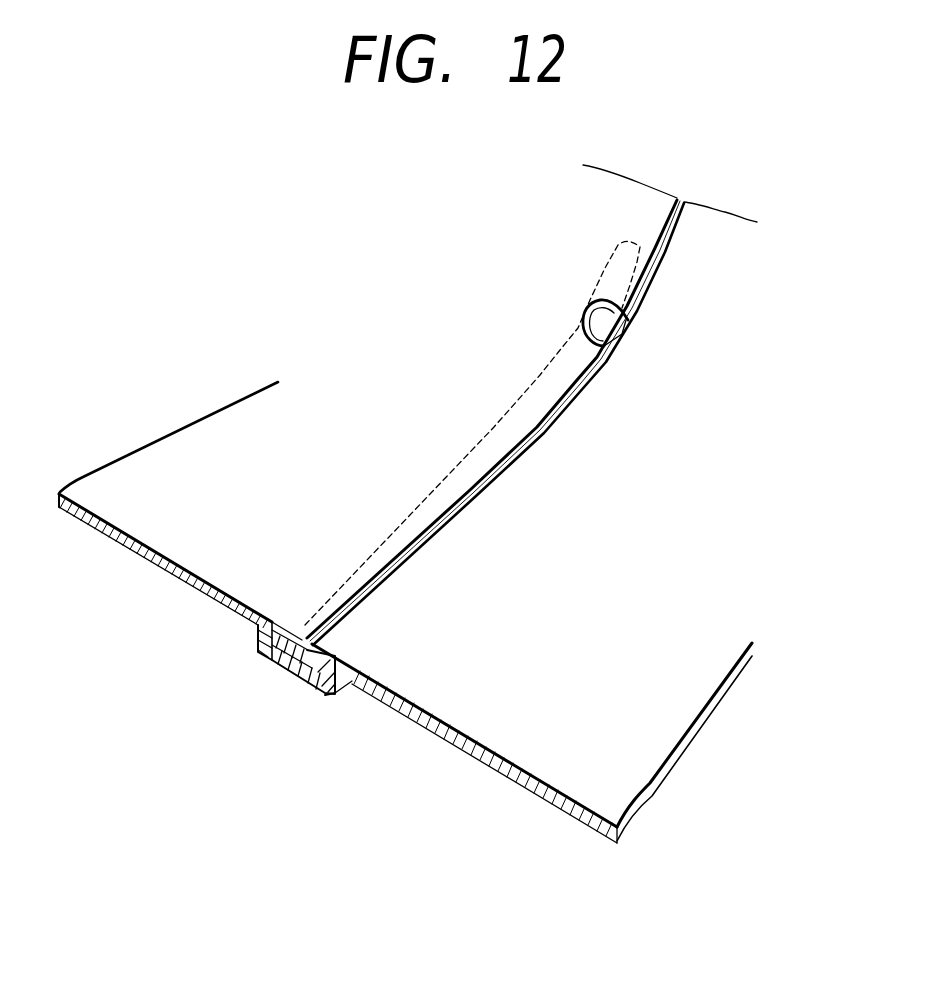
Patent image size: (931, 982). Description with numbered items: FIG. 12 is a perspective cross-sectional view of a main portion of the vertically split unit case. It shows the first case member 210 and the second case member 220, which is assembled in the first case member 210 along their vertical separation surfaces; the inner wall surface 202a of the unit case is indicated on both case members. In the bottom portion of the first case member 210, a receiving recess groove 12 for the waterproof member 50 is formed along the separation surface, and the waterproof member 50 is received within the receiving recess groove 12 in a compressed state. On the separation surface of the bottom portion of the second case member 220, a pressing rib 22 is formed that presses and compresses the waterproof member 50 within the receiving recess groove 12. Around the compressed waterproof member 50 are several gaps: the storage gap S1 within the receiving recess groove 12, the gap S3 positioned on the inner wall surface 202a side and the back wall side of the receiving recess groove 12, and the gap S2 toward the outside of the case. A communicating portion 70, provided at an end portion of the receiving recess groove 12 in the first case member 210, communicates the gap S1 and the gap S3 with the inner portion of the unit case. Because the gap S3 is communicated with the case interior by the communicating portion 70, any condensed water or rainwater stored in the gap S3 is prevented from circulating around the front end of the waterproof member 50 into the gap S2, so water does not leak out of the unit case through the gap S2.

The first case member 210 is at (225, 413).
The inner wall surface 202a is at (137, 470).
The receiving recess groove 12 is at (617, 332).
The communicating portion 70 is at (585, 313).
The second case member 220 is at (702, 717).
The pressing rib 22 is at (322, 683).
The waterproof member 50 is at (258, 656).
The gap S1 is at (292, 626).
The gap S2 is at (273, 662).
The gap S3 is at (278, 622).